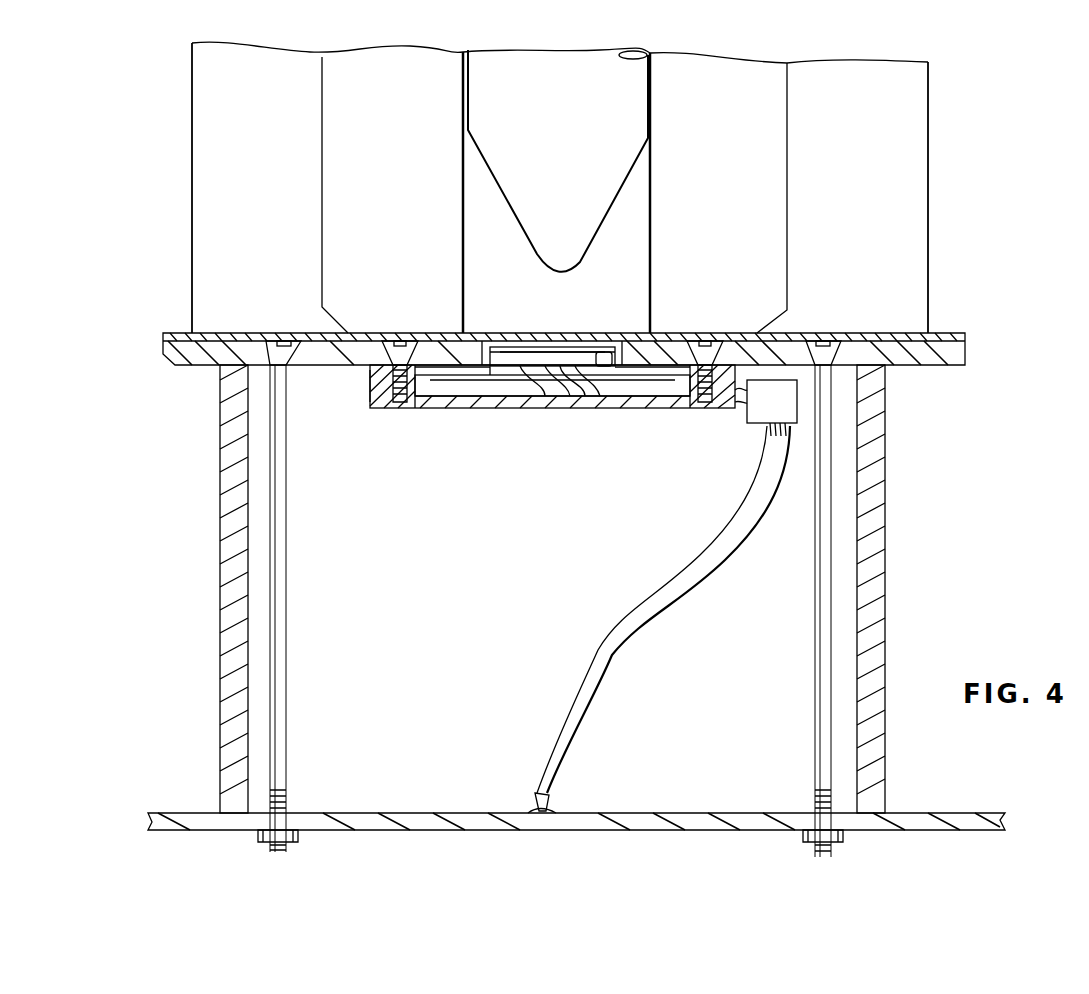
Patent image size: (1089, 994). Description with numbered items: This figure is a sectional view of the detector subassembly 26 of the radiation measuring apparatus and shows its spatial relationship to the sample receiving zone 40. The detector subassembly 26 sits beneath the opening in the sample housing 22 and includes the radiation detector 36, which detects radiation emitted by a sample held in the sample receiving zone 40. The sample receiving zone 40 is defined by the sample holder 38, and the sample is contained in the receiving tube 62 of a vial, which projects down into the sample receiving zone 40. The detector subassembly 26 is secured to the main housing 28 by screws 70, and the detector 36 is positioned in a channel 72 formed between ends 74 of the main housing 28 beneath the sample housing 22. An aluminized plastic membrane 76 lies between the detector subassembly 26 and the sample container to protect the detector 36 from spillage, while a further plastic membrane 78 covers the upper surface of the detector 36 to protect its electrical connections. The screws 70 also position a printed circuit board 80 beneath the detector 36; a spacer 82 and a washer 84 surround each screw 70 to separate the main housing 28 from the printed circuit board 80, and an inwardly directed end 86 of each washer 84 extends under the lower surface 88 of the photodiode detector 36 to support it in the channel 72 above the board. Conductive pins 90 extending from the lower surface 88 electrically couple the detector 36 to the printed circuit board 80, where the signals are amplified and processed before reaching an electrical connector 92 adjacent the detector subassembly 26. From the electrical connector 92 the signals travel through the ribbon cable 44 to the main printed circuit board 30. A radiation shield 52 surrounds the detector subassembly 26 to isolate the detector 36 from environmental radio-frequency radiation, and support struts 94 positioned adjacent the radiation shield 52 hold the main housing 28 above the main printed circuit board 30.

The sample housing 22 is at (900, 265).
The detector subassembly 26 is at (572, 420).
The main housing 28 is at (950, 355).
The main printed circuit board 30 is at (654, 837).
The radiation detector 36 is at (548, 378).
The sample holder 38 is at (753, 208).
The sample receiving zone 40 is at (635, 243).
The ribbon cable 44 is at (580, 692).
The radiation shield 52 is at (892, 557).
The receiving tube 62 is at (574, 169).
The screws 70 is at (400, 341).
The channel 72 is at (655, 345).
The ends of the main housing 74 is at (482, 350).
The aluminized plastic membrane 76 is at (690, 345).
The plastic membrane 78 is at (577, 352).
The printed circuit board 80 is at (499, 413).
The spacer 82 is at (365, 383).
The washer 84 is at (432, 378).
The inwardly directed end 86 is at (618, 398).
The lower surface 88 is at (586, 412).
The conductive pins 90 is at (458, 386).
The electrical connector 92 is at (750, 430).
The support struts 94 is at (283, 550).